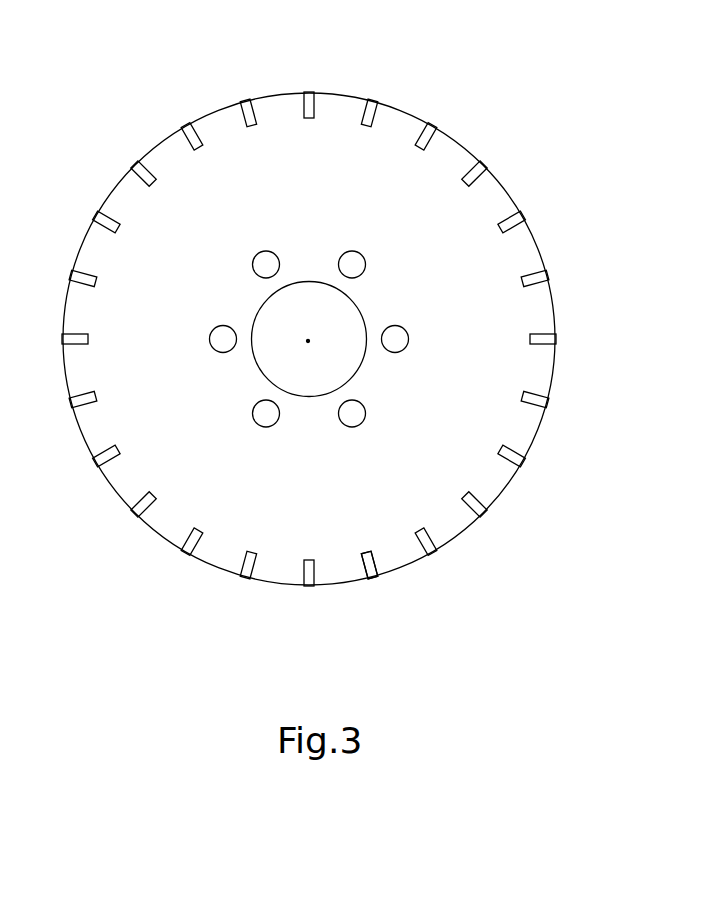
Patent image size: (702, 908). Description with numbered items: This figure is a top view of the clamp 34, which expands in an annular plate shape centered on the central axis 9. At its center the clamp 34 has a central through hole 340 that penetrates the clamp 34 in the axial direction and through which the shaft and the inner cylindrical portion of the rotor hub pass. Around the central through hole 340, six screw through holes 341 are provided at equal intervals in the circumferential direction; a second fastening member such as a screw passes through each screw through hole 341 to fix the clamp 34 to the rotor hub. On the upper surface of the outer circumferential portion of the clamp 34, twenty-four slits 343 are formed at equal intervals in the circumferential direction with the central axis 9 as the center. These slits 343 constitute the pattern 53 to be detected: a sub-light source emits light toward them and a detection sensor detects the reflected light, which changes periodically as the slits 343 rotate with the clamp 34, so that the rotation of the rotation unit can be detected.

The clamp 34 is at (398, 86).
The slits 343 is at (138, 162).
The pattern to be detected 53 is at (242, 576).
The screw through holes 341 is at (352, 262).
The central through hole 340 is at (275, 358).
The central axis 9 is at (309, 340).